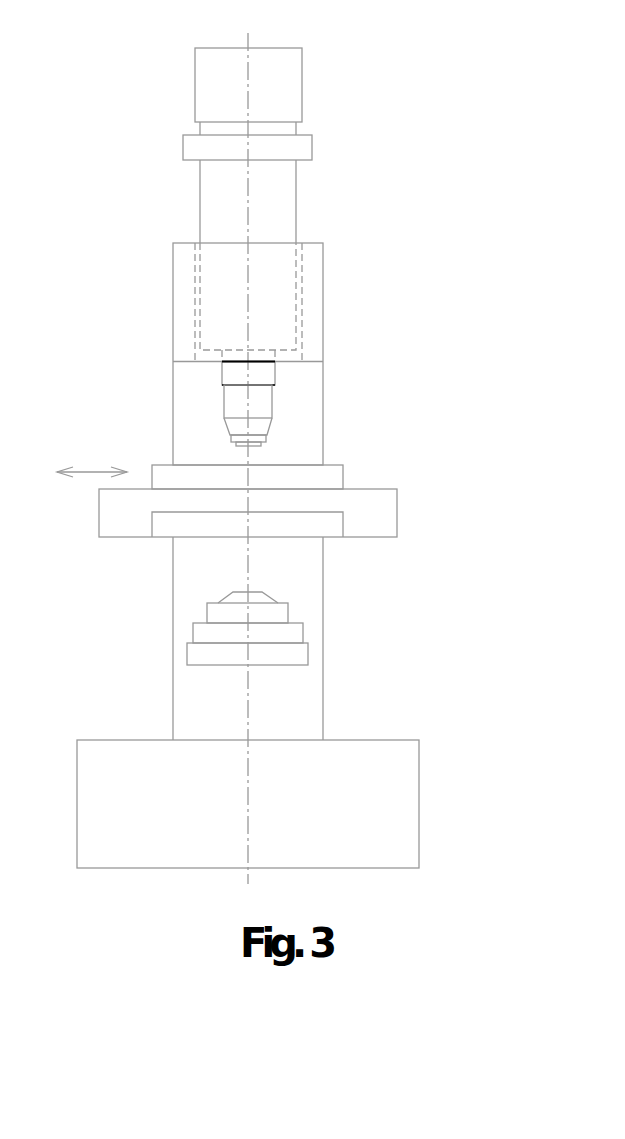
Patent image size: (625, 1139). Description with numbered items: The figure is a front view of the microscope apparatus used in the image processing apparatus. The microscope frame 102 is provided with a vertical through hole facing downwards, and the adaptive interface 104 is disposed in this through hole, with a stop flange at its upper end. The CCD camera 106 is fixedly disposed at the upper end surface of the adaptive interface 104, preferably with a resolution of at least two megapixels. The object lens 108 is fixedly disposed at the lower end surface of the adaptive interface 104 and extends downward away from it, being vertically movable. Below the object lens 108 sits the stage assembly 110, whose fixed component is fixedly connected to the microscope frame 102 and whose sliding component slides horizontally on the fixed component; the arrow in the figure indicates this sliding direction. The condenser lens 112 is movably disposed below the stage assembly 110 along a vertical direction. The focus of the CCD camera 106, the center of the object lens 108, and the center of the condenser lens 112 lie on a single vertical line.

The microscope frame 102 is at (308, 714).
The adaptive interface 104 is at (297, 204).
The CCD camera 106 is at (302, 88).
The object lens 108 is at (273, 405).
The stage assembly 110 is at (278, 475).
The condenser lens 112 is at (303, 633).